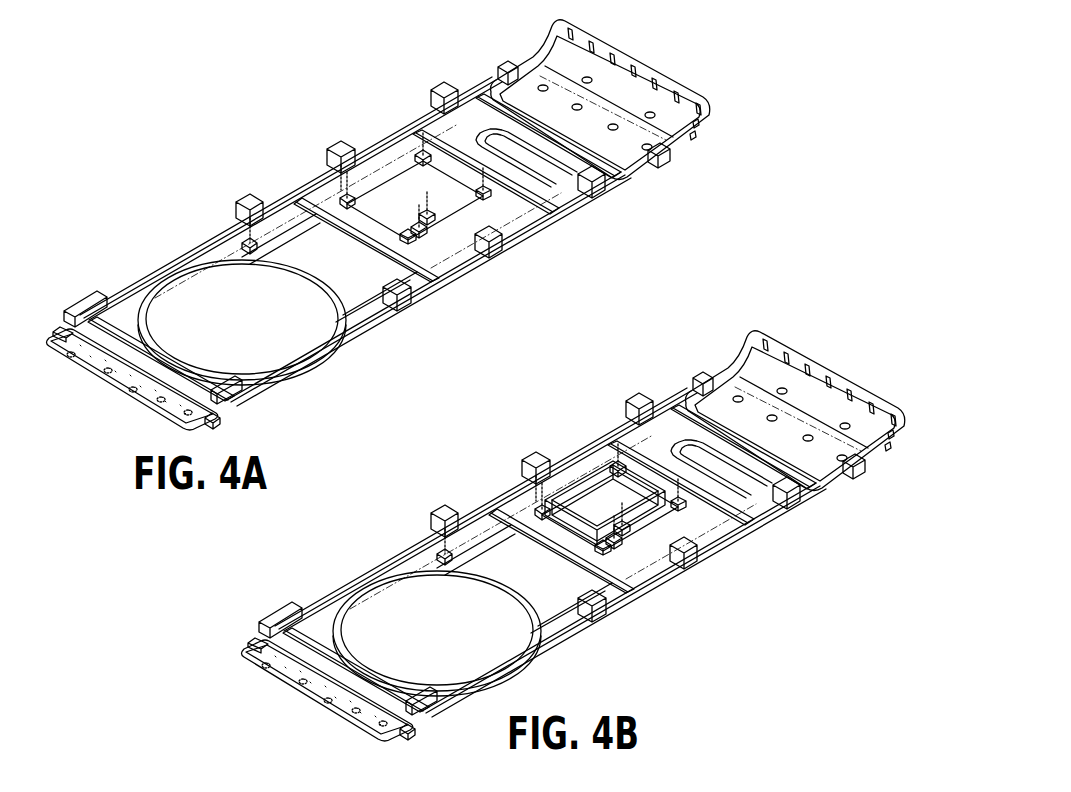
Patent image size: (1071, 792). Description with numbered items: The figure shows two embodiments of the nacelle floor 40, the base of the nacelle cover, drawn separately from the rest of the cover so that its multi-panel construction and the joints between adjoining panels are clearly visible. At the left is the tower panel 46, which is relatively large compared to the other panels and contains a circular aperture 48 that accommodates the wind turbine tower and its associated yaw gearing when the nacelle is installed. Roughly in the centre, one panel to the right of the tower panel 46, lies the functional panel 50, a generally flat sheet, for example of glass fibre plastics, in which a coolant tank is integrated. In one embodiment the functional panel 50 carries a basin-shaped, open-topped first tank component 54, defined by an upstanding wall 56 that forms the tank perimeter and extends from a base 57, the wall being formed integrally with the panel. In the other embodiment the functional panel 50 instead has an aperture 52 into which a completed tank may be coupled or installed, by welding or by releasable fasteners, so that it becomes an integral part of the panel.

In FIG. 4A, the nacelle floor 40 is at (103, 396).
In FIG. 4B, the nacelle floor 40 is at (329, 689).
In FIG. 4A, the tower panel 46 is at (240, 250).
In FIG. 4B, the tower panel 46 is at (489, 554).
In FIG. 4A, the aperture 48 is at (184, 298).
In FIG. 4B, the aperture 48 is at (429, 614).
In FIG. 4A, the functional panel 50 is at (333, 201).
In FIG. 4B, the functional panel 50 is at (550, 552).
In FIG. 4A, the aperture 52 is at (389, 183).
In FIG. 4B, the first tank component 54 is at (605, 466).
In FIG. 4B, the upstanding wall 56 is at (654, 507).
In FIG. 4B, the base 57 is at (625, 547).